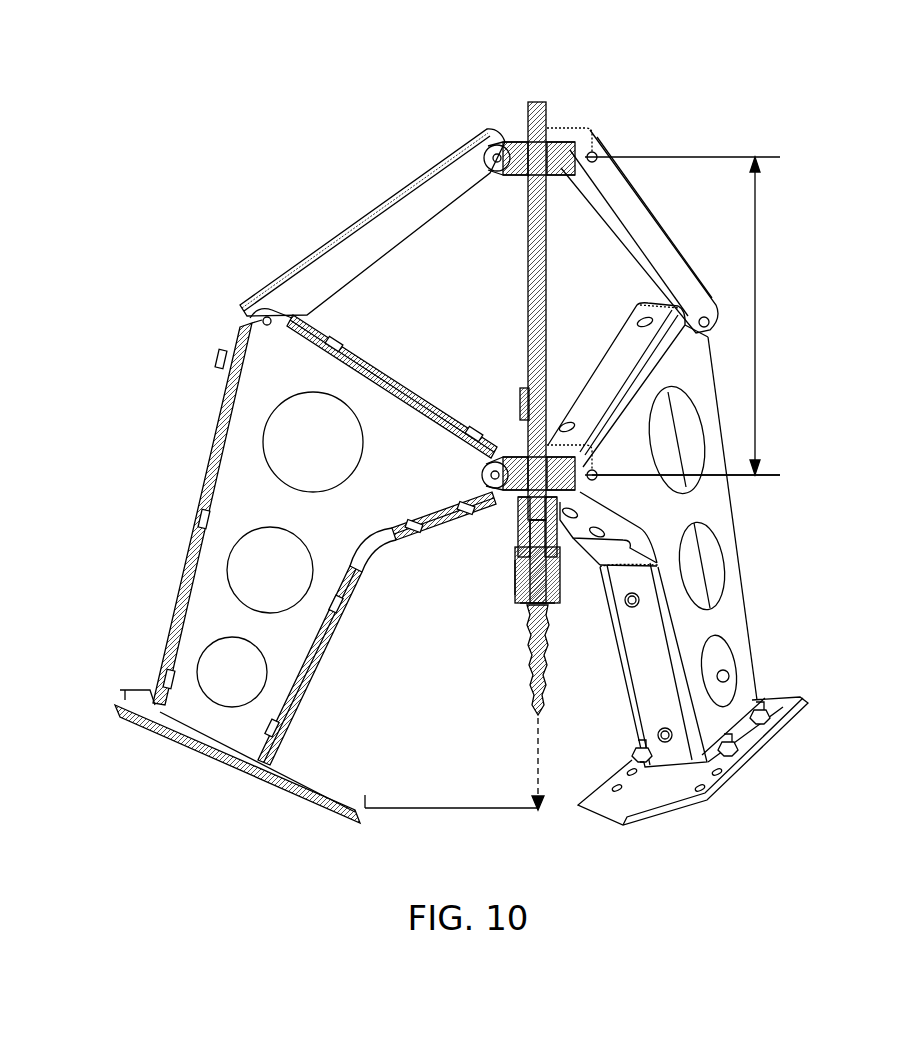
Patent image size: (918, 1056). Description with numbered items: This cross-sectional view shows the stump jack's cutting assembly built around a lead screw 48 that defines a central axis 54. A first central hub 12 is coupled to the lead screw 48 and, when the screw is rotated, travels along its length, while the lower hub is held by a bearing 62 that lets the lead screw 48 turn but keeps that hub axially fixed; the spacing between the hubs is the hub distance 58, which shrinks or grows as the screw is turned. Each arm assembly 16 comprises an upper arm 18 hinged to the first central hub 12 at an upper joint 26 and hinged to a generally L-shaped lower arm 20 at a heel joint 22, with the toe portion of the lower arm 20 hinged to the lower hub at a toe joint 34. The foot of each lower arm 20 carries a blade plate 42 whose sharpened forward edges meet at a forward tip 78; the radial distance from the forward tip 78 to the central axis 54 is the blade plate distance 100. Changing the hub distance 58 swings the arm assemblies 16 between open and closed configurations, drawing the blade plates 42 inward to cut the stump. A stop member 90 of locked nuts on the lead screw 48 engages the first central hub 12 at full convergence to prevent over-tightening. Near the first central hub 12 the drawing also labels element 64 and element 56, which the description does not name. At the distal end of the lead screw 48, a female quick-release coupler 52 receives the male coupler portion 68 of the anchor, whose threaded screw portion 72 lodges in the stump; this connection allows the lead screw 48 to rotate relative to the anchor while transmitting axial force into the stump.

The first central hub 12 is at (560, 155).
The arm assembly 16 is at (334, 221).
The upper arm 18 is at (372, 208).
The lower arm 20 is at (208, 452).
The heel joint 22 is at (323, 487).
The upper joint 26 is at (436, 122).
The toe joint 34 is at (470, 552).
The blade plate 42 is at (240, 775).
The lead screw 48 is at (528, 290).
The quick-release coupler 52 is at (618, 516).
The central axis 54 is at (520, 604).
The upper hinge block 56 is at (522, 168).
The hub distance 58 is at (757, 312).
The bearing 62 is at (508, 474).
The upper hinge 64 is at (528, 110).
The coupler portion 68 is at (534, 580).
The screw portion 72 is at (530, 650).
The forward tip 78 is at (366, 800).
The stop member 90 is at (572, 368).
The blade plate distance 100 is at (440, 810).